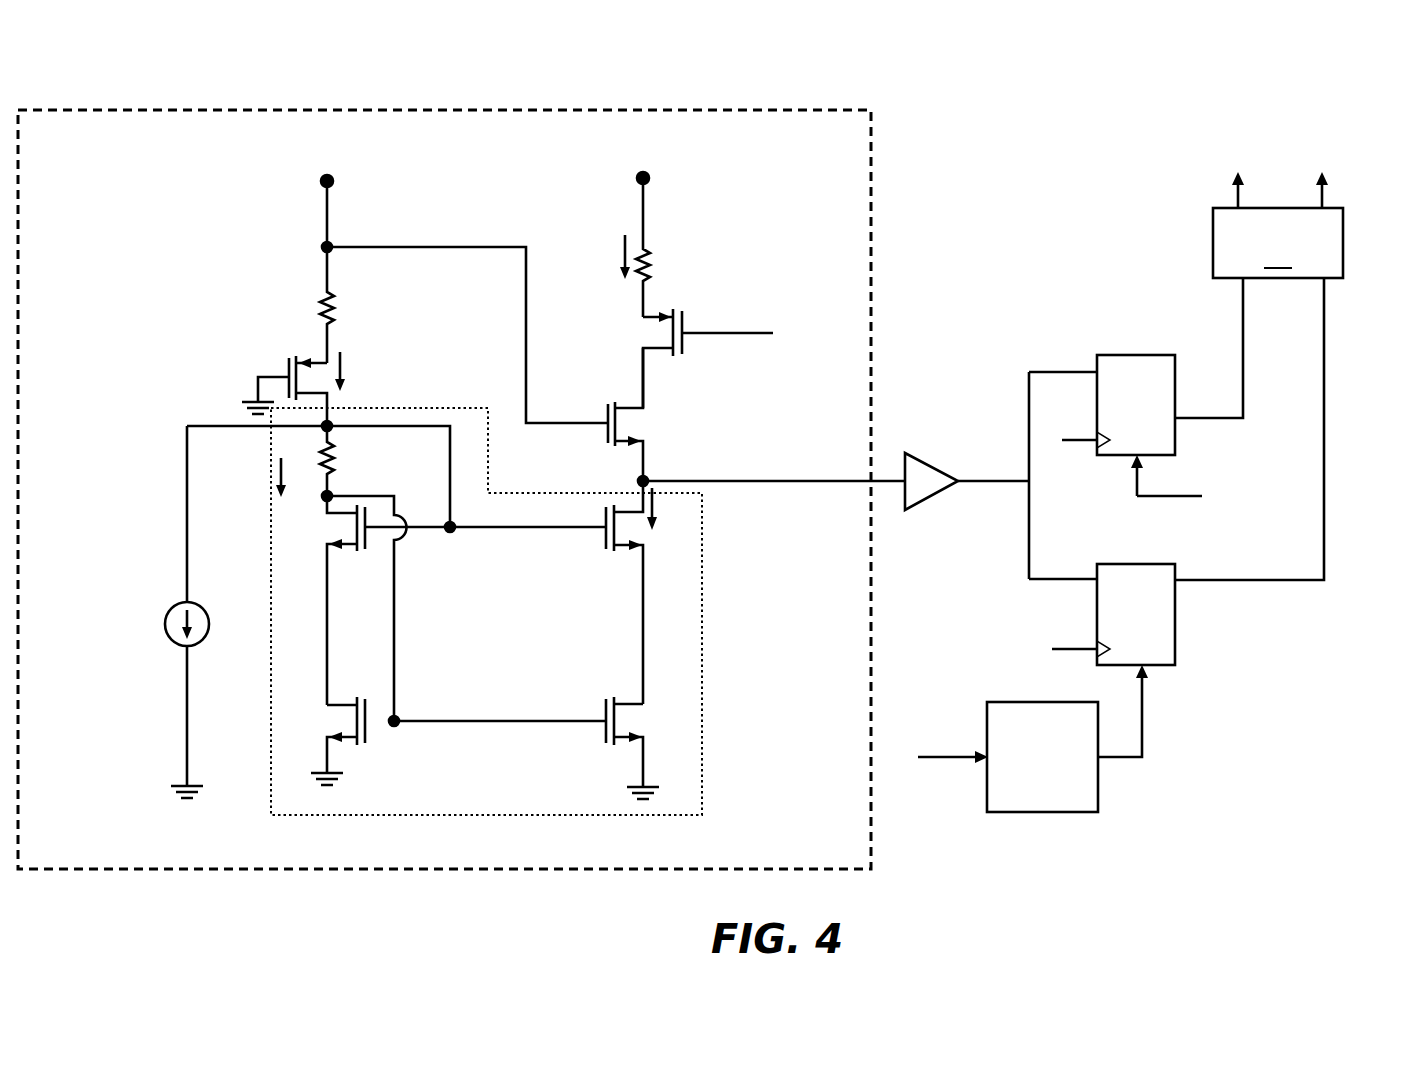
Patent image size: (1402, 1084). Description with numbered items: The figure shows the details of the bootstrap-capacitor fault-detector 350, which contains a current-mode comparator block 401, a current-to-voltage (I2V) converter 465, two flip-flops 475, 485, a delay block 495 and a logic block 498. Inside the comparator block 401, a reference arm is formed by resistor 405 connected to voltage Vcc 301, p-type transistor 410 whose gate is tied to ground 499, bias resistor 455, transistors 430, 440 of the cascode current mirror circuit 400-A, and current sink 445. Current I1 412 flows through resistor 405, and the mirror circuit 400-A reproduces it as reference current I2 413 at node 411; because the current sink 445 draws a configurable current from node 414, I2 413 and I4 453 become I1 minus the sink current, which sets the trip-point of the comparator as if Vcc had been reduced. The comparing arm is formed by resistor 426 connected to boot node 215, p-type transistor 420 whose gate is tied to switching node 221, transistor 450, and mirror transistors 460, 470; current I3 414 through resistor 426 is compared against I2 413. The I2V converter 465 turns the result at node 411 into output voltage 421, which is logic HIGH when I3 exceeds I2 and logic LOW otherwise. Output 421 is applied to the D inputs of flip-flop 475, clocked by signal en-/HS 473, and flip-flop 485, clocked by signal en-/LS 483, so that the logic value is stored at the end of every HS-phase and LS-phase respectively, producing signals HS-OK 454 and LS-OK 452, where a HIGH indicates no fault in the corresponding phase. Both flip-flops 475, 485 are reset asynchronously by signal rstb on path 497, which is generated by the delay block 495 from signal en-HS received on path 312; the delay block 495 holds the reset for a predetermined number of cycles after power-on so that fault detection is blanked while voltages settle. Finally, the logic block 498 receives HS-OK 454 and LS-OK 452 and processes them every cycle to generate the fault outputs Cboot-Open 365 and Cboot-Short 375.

The fault-detector block 350 is at (943, 95).
The current-mode comparator block 401 is at (92, 147).
The voltage Vcc 301 is at (365, 159).
The resistor 405 is at (334, 314).
The transistor 410 is at (289, 373).
The ground 499 is at (256, 402).
The current I1 412 is at (379, 371).
The resistor 455 is at (320, 464).
The current I3 / node 414 is at (347, 437).
The current I4 453 is at (302, 489).
The transistor 430 is at (330, 526).
The transistor 440 is at (328, 714).
The current sink 445 is at (175, 604).
The circuit 400-A is at (524, 808).
The boot node 215 is at (649, 176).
The resistor 426 is at (650, 262).
The transistor 420 is at (631, 332).
The switching node 221 is at (747, 333).
The transistor 450 is at (610, 420).
The node 411 is at (664, 472).
The current I2 413 is at (677, 517).
The transistor 460 is at (617, 554).
The transistor 470 is at (643, 730).
The current-to-voltage (I2V) converter 465 is at (945, 452).
The output voltage 421 is at (1000, 466).
The flip-flop 475 is at (1147, 341).
The signal en-/HS 473 is at (1068, 442).
The signal HS-OK 454 is at (1216, 421).
The path carrying signal rstb 497 is at (1202, 498).
The flip-flop 485 is at (1152, 550).
The signal en-/LS 483 is at (1056, 647).
The signal LS-OK 452 is at (1215, 583).
The delay block 495 is at (1013, 702).
The path carrying signal en-HS 312 is at (930, 758).
The logic block 498 is at (1278, 243).
The signal Cboot-Open 365 is at (1239, 183).
The signal Cboot-Short 375 is at (1348, 170).